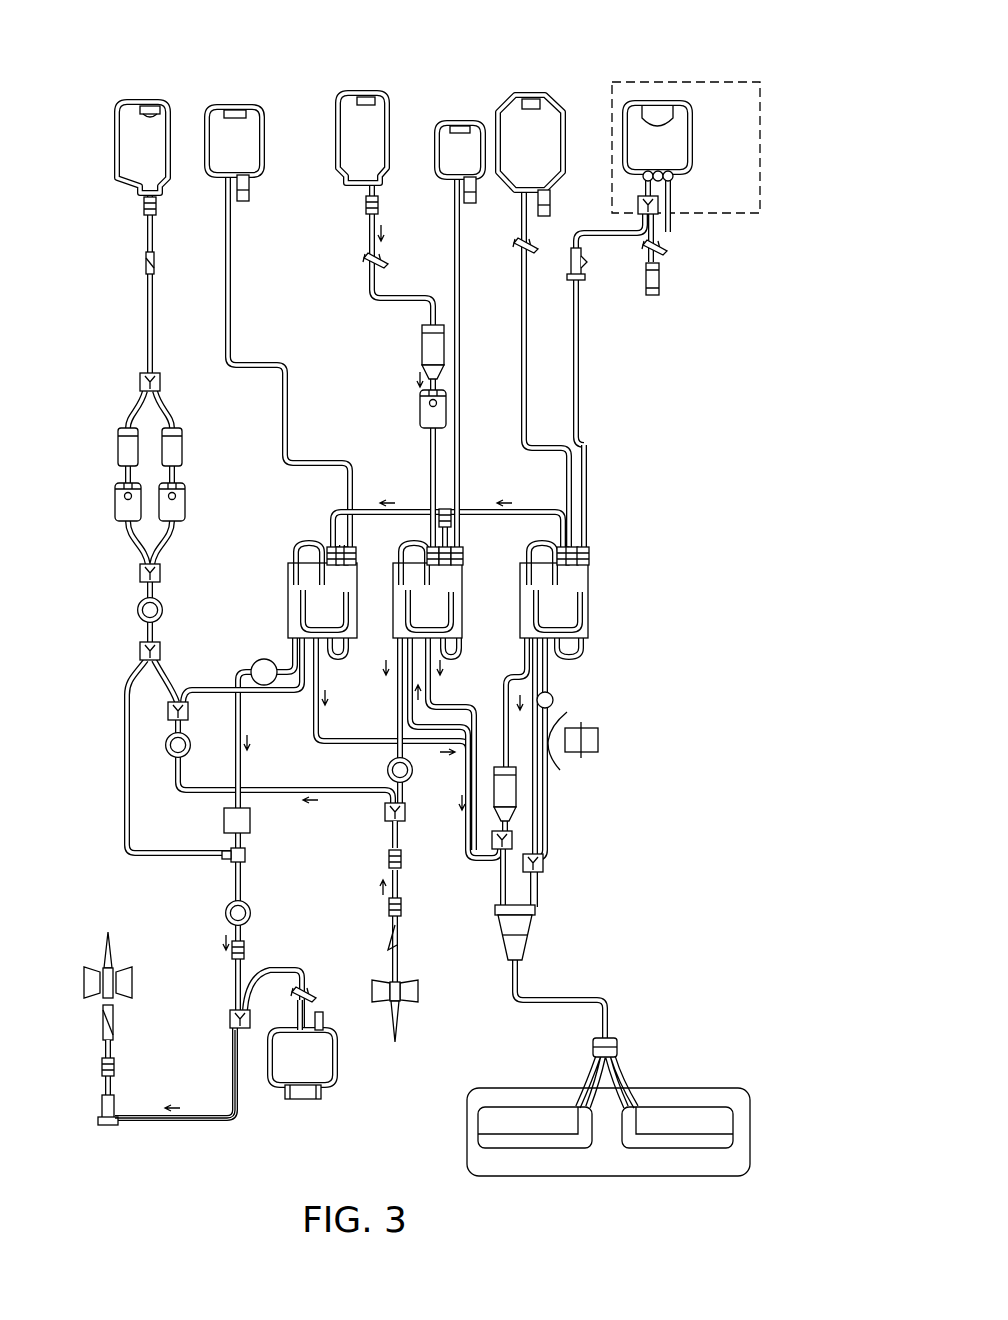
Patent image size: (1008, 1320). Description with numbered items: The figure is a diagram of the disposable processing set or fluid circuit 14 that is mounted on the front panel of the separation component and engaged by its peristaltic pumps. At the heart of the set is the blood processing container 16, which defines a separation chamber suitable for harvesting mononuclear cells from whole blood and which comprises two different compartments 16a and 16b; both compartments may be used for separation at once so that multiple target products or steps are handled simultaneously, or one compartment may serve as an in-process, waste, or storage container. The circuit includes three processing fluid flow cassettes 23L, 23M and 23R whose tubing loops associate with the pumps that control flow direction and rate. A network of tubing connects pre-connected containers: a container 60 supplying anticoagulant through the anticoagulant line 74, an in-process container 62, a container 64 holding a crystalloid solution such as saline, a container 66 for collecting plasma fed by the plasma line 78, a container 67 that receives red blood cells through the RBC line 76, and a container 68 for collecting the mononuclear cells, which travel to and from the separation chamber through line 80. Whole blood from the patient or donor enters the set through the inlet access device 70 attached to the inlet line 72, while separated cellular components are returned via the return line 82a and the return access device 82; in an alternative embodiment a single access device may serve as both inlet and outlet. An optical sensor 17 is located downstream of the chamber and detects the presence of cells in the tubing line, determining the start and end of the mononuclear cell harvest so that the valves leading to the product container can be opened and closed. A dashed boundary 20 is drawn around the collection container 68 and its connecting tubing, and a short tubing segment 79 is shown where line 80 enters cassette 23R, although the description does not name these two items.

The disposable processing set 14 is at (805, 45).
The blood processing container 16 is at (745, 1128).
The compartment 16a is at (652, 1105).
The compartment 16b is at (560, 1140).
The optical sensor 17 is at (556, 697).
The reagent module 20 is at (762, 185).
The processing fluid flow cassette 23L is at (288, 590).
The processing fluid flow cassette 23M is at (462, 578).
The processing fluid flow cassette 23R is at (590, 590).
The anticoagulant container 60 is at (365, 115).
The in-process container 62 is at (250, 140).
The crystalloid solution container 64 is at (168, 125).
The plasma collection container 66 is at (550, 118).
The red blood cell container 67 is at (462, 138).
The mononuclear cell collection container 68 is at (690, 157).
The inlet access device 70 is at (405, 1012).
The inlet line 72 is at (400, 893).
The anticoagulant line 74 is at (397, 300).
The RBC line 76 is at (460, 475).
The plasma line 78 is at (527, 338).
The tubing line 79 is at (586, 500).
The mononuclear cell line 80 is at (578, 385).
The return access device 82 is at (105, 962).
The return line 82a is at (205, 1125).